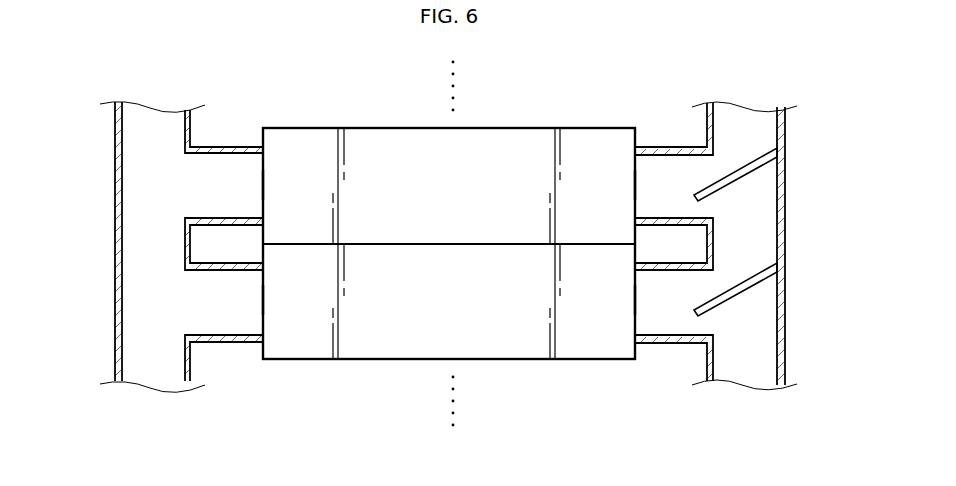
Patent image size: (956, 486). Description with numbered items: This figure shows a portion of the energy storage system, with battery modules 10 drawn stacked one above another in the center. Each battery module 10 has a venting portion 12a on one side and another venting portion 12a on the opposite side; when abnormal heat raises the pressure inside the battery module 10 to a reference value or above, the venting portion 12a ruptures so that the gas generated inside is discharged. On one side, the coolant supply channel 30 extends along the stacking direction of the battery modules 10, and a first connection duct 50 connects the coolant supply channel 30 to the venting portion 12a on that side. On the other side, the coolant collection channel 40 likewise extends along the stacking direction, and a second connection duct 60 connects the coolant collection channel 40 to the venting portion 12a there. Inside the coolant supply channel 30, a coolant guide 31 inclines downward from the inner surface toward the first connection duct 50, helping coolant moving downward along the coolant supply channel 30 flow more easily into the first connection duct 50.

The battery module 10 is at (589, 128).
The venting portion 12a is at (263, 185).
The coolant supply channel 30 is at (785, 217).
The coolant guide 31 is at (738, 178).
The coolant collection channel 40 is at (115, 217).
The first connection duct 50 is at (669, 147).
The second connection duct 60 is at (228, 146).